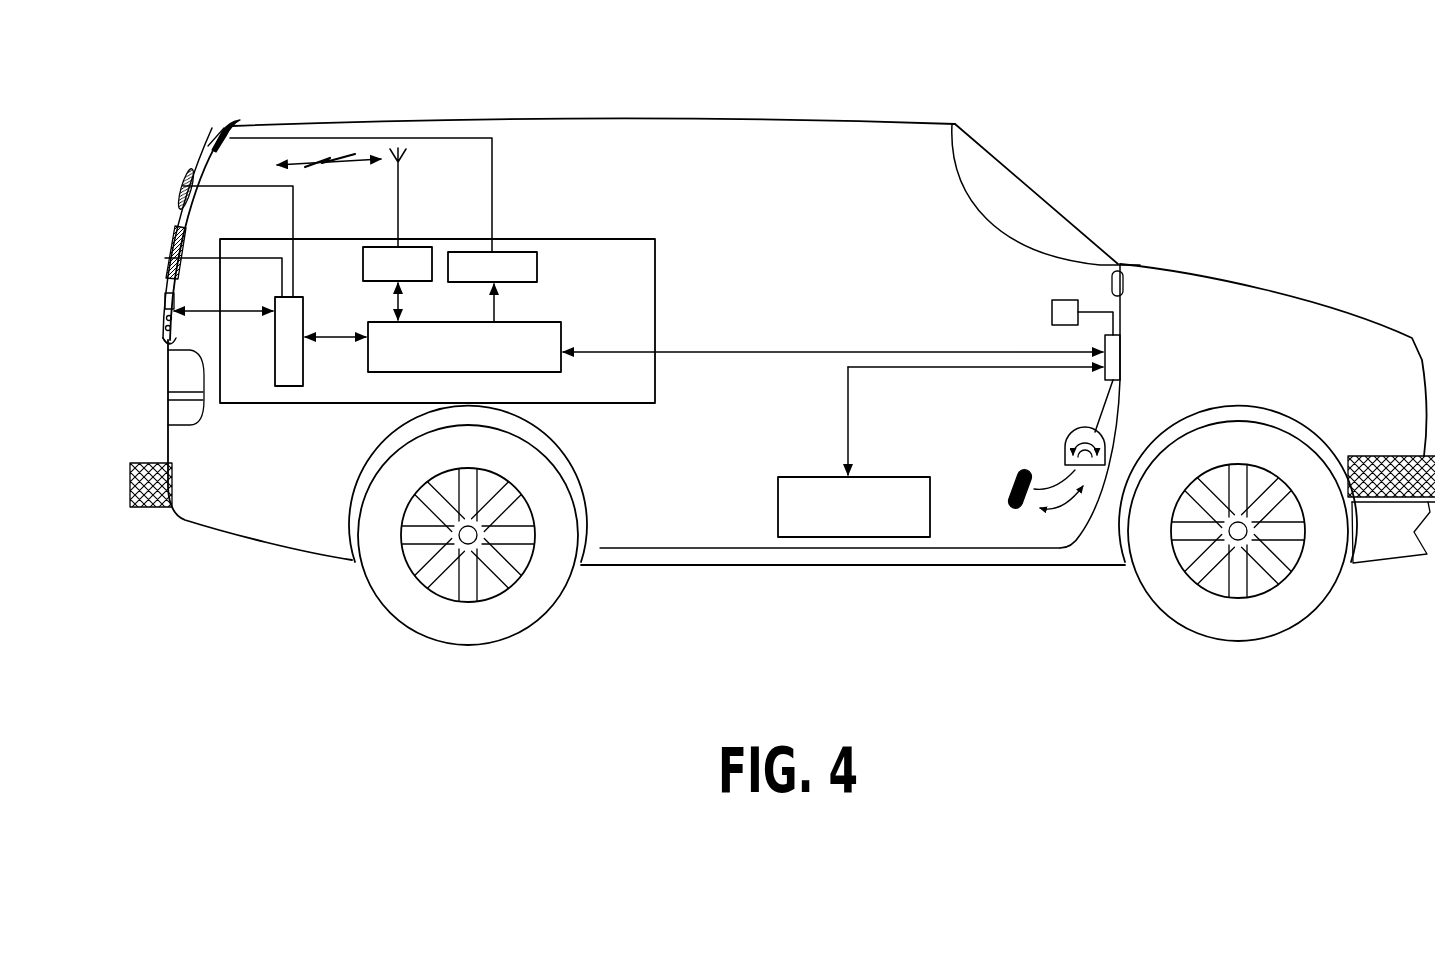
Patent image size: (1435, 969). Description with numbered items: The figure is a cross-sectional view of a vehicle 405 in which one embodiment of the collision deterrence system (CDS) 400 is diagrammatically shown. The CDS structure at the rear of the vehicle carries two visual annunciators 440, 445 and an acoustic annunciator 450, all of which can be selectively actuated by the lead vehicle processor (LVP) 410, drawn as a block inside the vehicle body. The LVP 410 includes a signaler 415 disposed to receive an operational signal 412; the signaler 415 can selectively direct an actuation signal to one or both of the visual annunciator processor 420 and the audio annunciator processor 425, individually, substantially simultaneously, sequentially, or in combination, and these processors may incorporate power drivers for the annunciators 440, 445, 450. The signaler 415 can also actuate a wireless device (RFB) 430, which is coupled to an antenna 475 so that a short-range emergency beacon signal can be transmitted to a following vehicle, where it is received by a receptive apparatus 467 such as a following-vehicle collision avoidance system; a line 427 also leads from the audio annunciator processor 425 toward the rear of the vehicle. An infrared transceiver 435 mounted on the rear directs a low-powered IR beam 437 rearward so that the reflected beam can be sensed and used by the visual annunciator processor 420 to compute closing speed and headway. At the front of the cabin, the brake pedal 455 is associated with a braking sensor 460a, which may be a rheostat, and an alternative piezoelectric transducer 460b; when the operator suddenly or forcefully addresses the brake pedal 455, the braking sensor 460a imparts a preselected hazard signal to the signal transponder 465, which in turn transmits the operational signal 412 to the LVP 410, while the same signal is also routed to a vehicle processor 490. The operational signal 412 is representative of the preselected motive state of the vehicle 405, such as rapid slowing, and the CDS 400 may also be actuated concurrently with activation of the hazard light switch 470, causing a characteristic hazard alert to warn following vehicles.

The collision deterrence system (CDS) 400 is at (1171, 147).
The vehicle 405 is at (797, 118).
The lead vehicle processor (LVP) 410 is at (641, 403).
The operational signal 412 is at (708, 350).
The signaler 415 is at (563, 337).
The visual annunciator processor 420 is at (277, 355).
The audio annunciator processor 425 is at (537, 256).
The audio speaker line 427 is at (493, 151).
The wireless device (RFB) 430 is at (363, 258).
The IR transceiver 435 is at (163, 332).
The IR beam 437 is at (160, 302).
The visual annunciator 440 is at (163, 253).
The visual annunciator 445 is at (178, 186).
The acoustic annunciator 450 is at (212, 130).
The brake pedal 455 is at (1007, 498).
The braking sensor 460a is at (1063, 452).
The piezoelectric transducer 460b is at (1098, 432).
The signal transponder 465 is at (1122, 373).
The receptive apparatus 467 is at (1124, 285).
The hazard light switch 470 is at (1052, 320).
The antenna 475 is at (400, 220).
The vehicle processor 490 is at (778, 527).